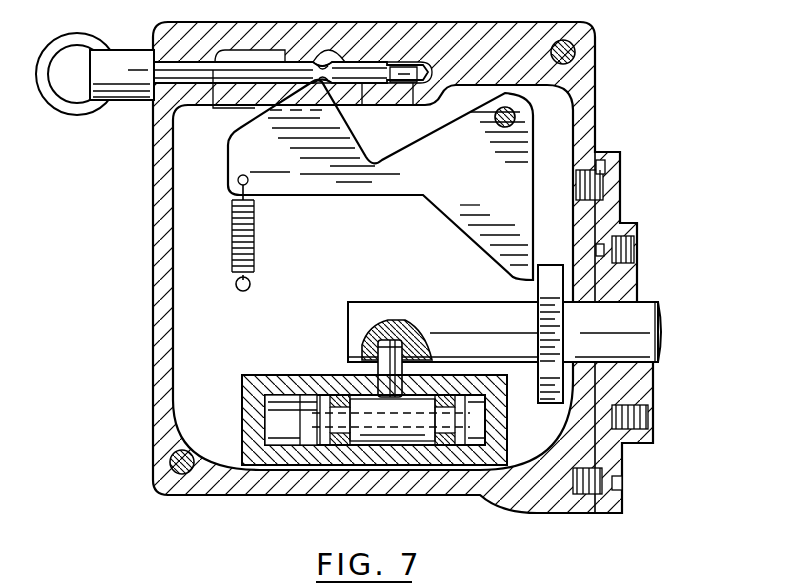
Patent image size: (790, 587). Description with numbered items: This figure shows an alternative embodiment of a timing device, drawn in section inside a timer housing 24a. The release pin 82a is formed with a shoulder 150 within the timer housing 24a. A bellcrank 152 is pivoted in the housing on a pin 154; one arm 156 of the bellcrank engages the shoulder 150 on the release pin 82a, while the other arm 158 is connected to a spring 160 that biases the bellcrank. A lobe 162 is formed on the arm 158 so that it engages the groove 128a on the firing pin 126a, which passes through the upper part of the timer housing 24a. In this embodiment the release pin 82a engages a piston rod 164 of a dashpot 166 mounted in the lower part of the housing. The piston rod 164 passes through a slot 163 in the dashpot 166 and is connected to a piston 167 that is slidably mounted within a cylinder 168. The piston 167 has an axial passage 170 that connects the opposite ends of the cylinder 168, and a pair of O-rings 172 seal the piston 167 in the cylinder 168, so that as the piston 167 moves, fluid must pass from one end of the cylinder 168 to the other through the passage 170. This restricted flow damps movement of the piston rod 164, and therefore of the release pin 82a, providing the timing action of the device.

The timer housing 24a is at (496, 50).
The firing pin 126a is at (375, 65).
The groove 128a is at (322, 63).
The lobe 162 is at (317, 92).
The bellcrank 152 is at (402, 183).
The arm 158 is at (265, 165).
The arm 156 is at (489, 192).
The pin 154 is at (515, 118).
The spring 160 is at (256, 245).
The shoulder 150 is at (552, 275).
The release pin 82a is at (440, 320).
The piston rod 164 is at (387, 362).
The slot 163 is at (358, 385).
The dashpot 166 is at (276, 470).
The cylinder 168 is at (288, 446).
The O-rings 172 is at (343, 447).
The piston 167 is at (385, 447).
The axial passage 170 is at (428, 447).